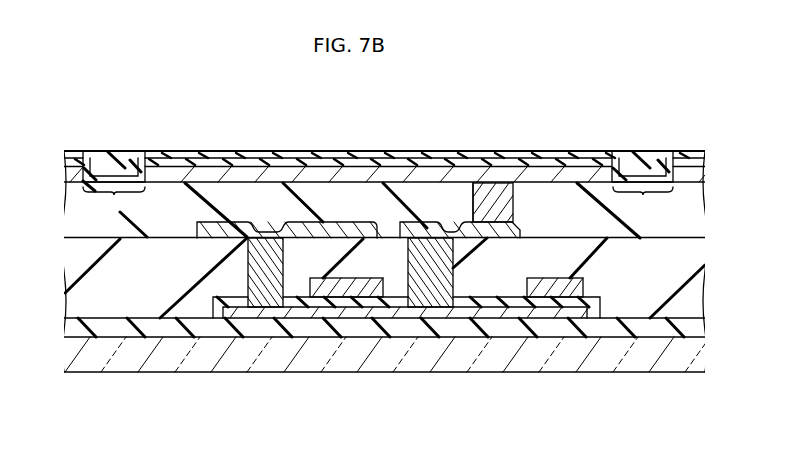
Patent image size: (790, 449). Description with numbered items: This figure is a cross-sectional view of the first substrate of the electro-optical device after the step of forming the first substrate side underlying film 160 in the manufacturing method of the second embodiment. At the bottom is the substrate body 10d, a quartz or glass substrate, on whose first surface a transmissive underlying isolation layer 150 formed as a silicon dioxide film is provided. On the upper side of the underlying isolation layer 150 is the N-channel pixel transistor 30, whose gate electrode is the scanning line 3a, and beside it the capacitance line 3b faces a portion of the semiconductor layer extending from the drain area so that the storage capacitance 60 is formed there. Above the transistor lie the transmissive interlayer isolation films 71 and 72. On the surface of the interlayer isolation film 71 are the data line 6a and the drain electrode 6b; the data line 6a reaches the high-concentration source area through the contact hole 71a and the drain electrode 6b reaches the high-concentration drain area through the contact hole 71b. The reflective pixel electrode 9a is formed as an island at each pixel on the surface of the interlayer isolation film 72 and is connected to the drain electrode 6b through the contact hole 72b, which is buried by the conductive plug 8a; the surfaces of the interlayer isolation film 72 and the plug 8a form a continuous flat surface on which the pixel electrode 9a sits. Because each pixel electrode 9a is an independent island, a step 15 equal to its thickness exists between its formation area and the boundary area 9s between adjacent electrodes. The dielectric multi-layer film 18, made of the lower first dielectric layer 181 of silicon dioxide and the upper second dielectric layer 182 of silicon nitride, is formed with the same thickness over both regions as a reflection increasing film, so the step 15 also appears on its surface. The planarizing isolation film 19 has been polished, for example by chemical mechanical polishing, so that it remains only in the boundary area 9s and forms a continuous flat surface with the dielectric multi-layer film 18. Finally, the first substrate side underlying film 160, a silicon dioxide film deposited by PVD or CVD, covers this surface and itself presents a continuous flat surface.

The step 15 is at (113, 152).
The planarizing isolation film 19 is at (122, 155).
The first substrate side underlying film 160 is at (384, 119).
The pixel electrode 9a is at (72, 177).
The dielectric multi-layer film 18 is at (382, 119).
The first dielectric layer 181 is at (437, 152).
The second dielectric layer 182 is at (487, 152).
The contact hole 72b is at (473, 200).
The plug 8a is at (513, 213).
The drain electrode 6b is at (518, 232).
The data line 6a is at (197, 220).
The boundary area 9s is at (378, 204).
The contact hole 71a is at (250, 262).
The contact hole 71b is at (453, 268).
The scanning line 3a is at (315, 278).
The capacitance line 3b is at (544, 278).
The interlayer isolation film 72 is at (690, 215).
The interlayer isolation film 71 is at (688, 253).
The underlying isolation layer 150 is at (419, 365).
The substrate body 10d is at (693, 357).
The pixel transistor 30 is at (356, 326).
The storage capacitance 60 is at (564, 326).